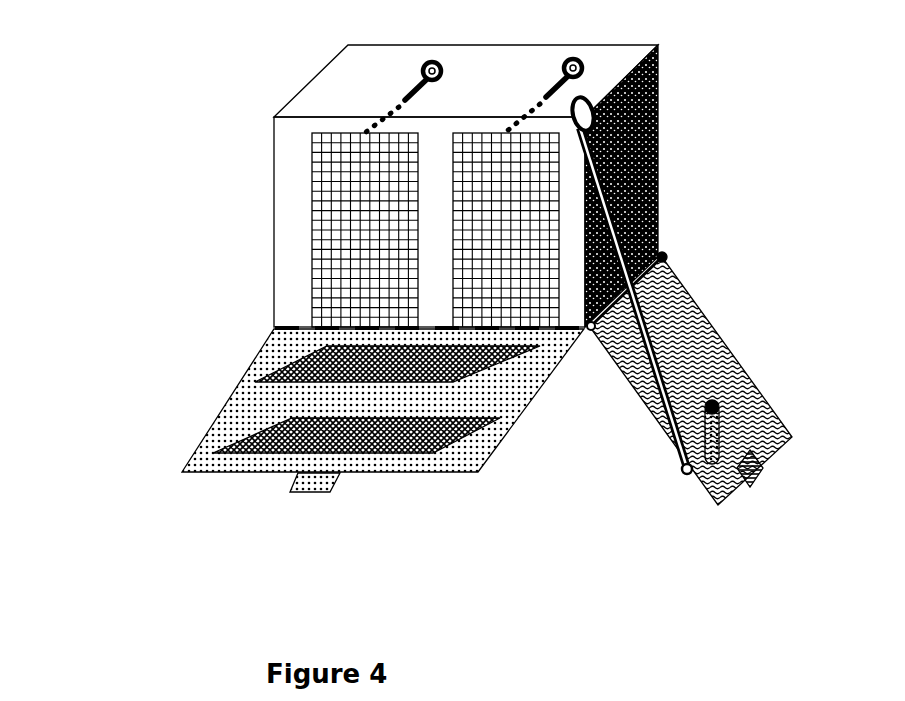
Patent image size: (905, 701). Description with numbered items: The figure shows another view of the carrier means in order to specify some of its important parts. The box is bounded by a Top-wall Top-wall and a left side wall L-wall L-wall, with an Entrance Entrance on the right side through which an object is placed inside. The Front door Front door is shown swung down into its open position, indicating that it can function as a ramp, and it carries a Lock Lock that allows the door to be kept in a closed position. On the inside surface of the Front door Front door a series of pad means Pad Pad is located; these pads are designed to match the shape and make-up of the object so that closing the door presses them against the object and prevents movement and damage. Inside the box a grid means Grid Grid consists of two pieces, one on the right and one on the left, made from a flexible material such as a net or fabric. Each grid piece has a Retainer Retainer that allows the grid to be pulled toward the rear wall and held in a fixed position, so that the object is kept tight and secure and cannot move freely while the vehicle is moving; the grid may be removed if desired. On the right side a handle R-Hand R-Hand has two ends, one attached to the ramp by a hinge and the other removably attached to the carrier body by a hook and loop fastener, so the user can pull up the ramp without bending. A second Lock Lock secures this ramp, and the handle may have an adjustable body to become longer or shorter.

The top wall Top-wall is at (312, 90).
The retainer Retainer is at (398, 98).
The left wall L-wall is at (272, 224).
The grid means Grid is at (310, 260).
The entrance Entrance is at (653, 133).
The front door Front door is at (240, 402).
The pad means Pad is at (440, 440).
The handle R-Hand is at (667, 455).
The lock means Lock is at (292, 489).